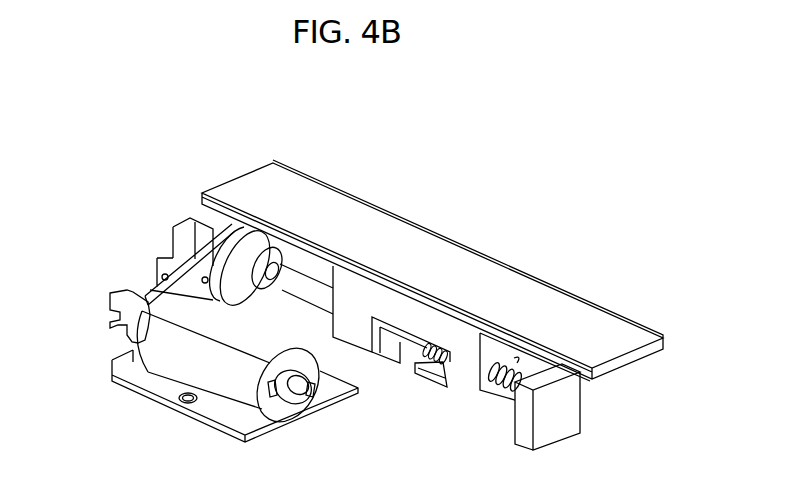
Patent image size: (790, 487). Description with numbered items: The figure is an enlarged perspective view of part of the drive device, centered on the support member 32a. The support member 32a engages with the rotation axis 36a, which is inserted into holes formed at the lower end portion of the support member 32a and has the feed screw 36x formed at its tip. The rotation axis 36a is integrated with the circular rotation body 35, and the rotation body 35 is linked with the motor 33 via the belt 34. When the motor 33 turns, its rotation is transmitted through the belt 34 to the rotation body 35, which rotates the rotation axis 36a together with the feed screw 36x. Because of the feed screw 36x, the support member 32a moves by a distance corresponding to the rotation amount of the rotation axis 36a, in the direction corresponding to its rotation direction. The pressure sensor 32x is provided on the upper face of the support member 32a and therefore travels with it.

The pressure sensor 32x is at (428, 273).
The support member 32a is at (355, 303).
The motor 33 is at (205, 362).
The belt 34 is at (152, 273).
The rotation body 35 is at (188, 243).
The rotation axis 36a is at (307, 290).
The feed screw 36x is at (502, 390).